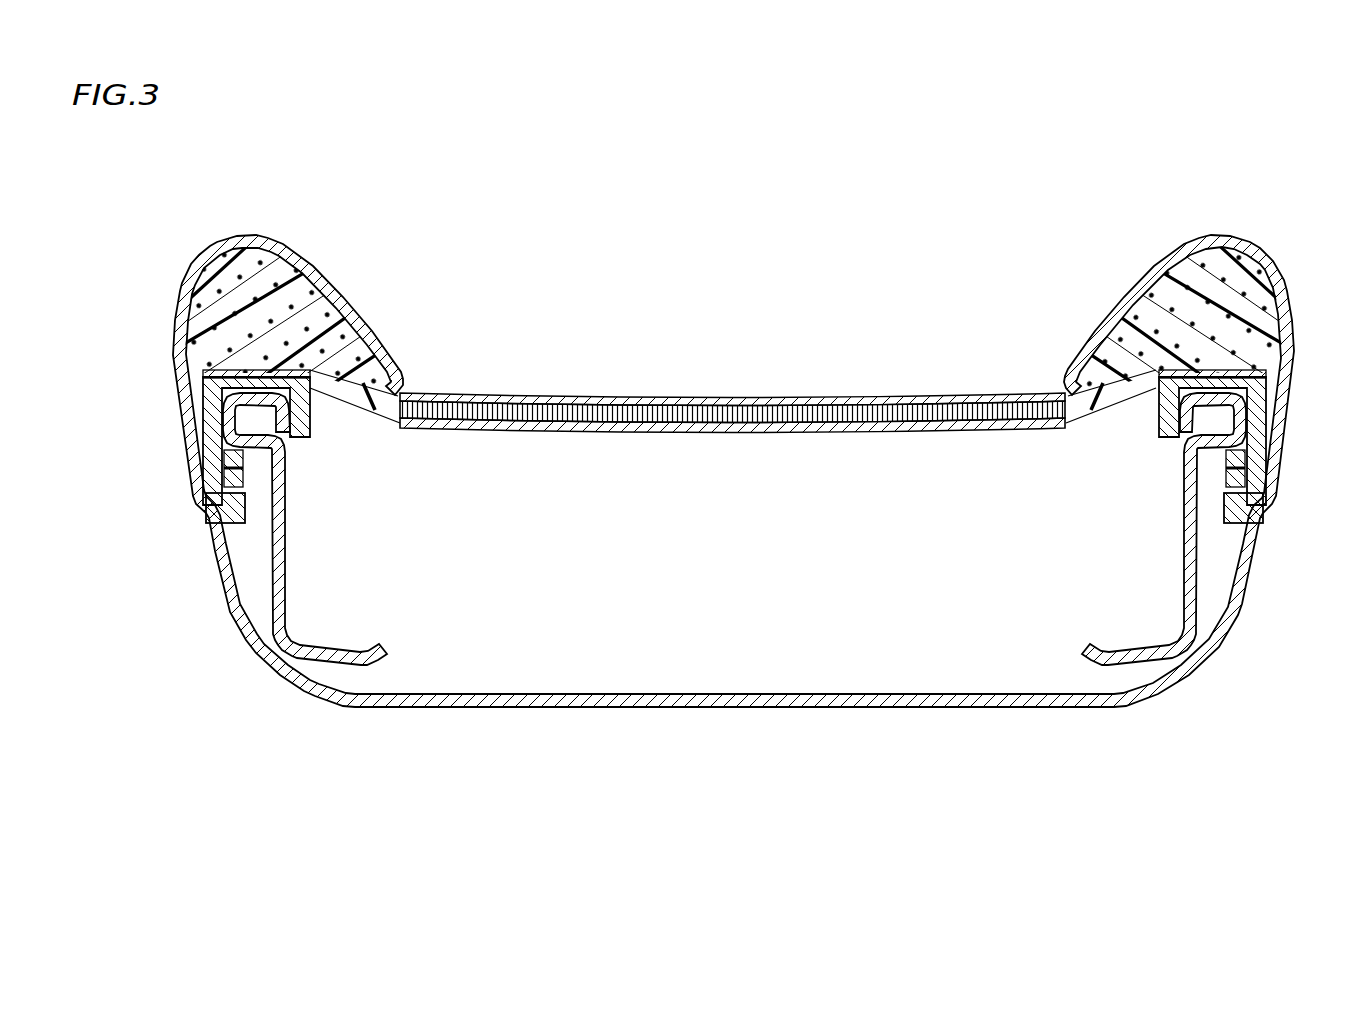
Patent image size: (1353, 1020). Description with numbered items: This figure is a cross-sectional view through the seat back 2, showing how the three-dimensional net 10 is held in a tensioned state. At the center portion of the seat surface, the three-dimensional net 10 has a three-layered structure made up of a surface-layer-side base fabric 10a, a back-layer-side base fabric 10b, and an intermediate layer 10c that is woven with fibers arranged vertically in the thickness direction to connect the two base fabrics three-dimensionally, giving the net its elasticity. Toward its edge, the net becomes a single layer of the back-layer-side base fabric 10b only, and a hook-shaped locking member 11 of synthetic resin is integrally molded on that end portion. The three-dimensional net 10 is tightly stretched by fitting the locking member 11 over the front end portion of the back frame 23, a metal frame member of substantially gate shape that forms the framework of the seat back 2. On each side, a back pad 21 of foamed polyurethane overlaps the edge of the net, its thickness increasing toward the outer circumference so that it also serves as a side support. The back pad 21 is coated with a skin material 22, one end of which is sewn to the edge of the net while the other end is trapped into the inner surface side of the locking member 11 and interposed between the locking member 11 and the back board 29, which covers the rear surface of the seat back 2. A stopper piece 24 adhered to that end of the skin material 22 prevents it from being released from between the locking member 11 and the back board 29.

The seat back 2 is at (1270, 198).
The three-dimensional net 10 is at (732, 413).
The surface-layer-side base fabric 10a is at (612, 393).
The back-layer-side base fabric 10b is at (640, 432).
The intermediate layer 10c is at (805, 420).
The locking member 11 is at (214, 424).
The back pad 21 is at (256, 258).
The skin material 22 is at (336, 292).
The back frame 23 is at (275, 570).
The stopper piece 24 is at (236, 470).
The back board 29 is at (737, 707).